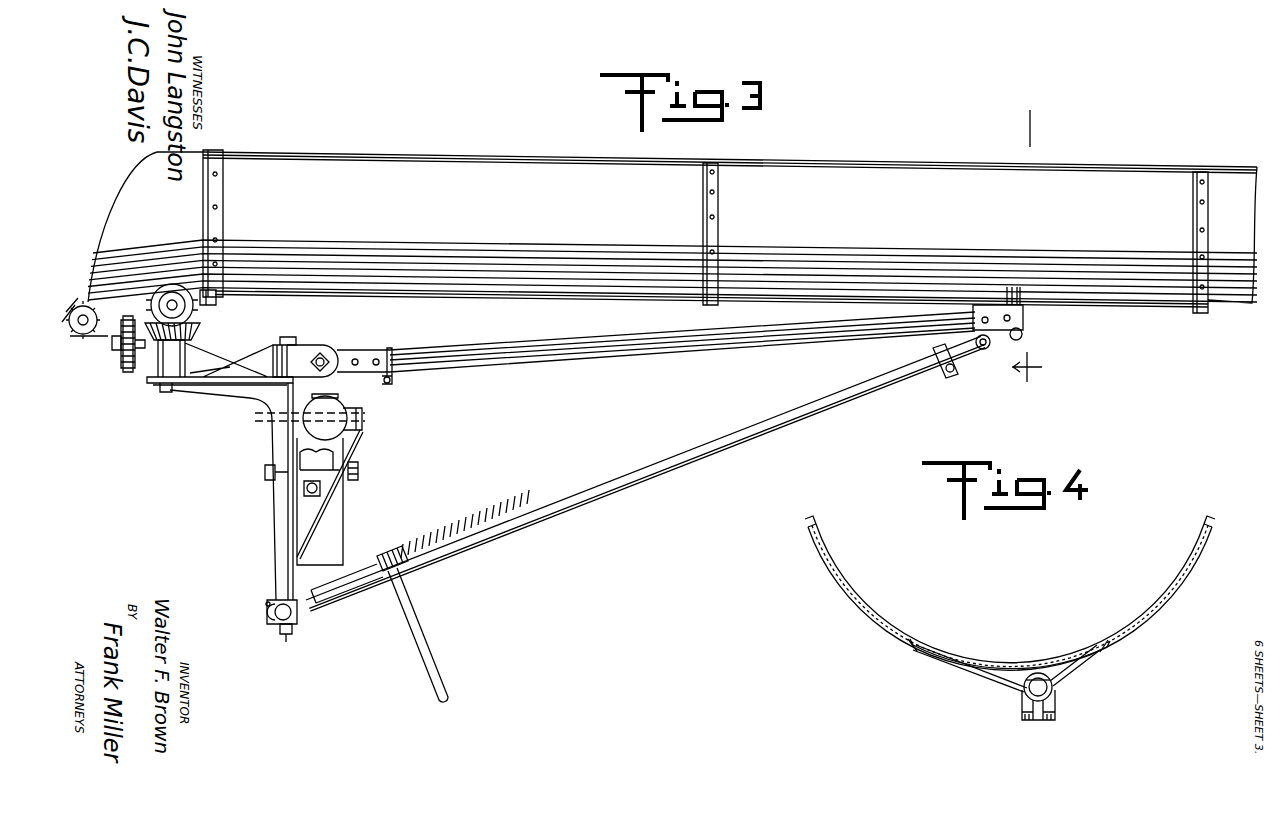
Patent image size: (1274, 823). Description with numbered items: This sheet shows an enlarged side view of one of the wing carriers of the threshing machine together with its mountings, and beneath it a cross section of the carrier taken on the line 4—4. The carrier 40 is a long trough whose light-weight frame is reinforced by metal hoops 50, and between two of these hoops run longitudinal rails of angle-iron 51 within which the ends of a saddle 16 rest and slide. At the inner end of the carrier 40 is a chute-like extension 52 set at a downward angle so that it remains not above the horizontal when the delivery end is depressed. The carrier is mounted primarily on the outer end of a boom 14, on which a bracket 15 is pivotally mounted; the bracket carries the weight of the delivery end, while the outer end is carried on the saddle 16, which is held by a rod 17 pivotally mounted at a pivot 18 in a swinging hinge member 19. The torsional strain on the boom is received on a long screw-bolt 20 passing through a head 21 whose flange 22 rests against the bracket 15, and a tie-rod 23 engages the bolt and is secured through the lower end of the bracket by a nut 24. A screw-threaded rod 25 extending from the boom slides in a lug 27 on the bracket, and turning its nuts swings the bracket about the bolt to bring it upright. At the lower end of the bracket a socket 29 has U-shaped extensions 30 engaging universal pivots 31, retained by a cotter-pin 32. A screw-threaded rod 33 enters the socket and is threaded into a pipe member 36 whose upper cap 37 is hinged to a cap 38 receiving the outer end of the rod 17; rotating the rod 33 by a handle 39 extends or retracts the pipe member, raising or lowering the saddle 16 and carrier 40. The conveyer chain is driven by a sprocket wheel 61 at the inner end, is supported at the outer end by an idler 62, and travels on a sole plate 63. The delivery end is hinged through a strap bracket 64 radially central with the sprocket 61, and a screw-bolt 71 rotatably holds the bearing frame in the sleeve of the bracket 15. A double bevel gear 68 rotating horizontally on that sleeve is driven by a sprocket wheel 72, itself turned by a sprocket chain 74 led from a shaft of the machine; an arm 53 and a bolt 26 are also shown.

In FIG. 3, the section line 4— 4 is at (1027, 242).
In FIG. 3, the boom 14 is at (340, 520).
In FIG. 3, the bracket 15 is at (275, 545).
In FIG. 3, the saddle 16 is at (1024, 306).
In FIG. 4, the saddle 16 is at (983, 680).
In FIG. 3, the rod 17 is at (646, 348).
In FIG. 4, the rod 17 is at (1038, 690).
In FIG. 3, the pivot 18 is at (330, 355).
In FIG. 3, the swinging hinge member 19 is at (298, 352).
In FIG. 3, the screw-bolt 20 is at (362, 428).
In FIG. 3, the head 21 is at (350, 410).
In FIG. 3, the flange 22 is at (334, 402).
In FIG. 3, the tie-rod 23 is at (357, 462).
In FIG. 3, the nut 24 is at (288, 636).
In FIG. 3, the rod 25 is at (300, 458).
In FIG. 3, the bolt 26 is at (360, 477).
In FIG. 3, the lug 27 is at (286, 480).
In FIG. 3, the socket 29 is at (370, 590).
In FIG. 3, the U-shaped extensions 30 is at (298, 620).
In FIG. 3, the universal pivots 31 is at (272, 618).
In FIG. 3, the cotter-pin 32 is at (266, 604).
In FIG. 3, the screw-threaded rod 33 is at (490, 526).
In FIG. 3, the pipe member 36 is at (698, 466).
In FIG. 3, the cap 37 is at (965, 370).
In FIG. 3, the cap 38 is at (1028, 335).
In FIG. 4, the cap 38 is at (1048, 720).
In FIG. 3, the handle 39 is at (438, 647).
In FIG. 3, the carrier 40 is at (882, 166).
In FIG. 4, the carrier 40 is at (866, 603).
In FIG. 3, the metal hoops 50 is at (222, 152).
In FIG. 4, the metal hoops 50 is at (827, 576).
In FIG. 3, the angle-iron rails 51 is at (1168, 298).
In FIG. 4, the angle-iron rails 51 is at (912, 652).
In FIG. 3, the chute-like extension 52 is at (110, 232).
In FIG. 3, the arm 53 is at (82, 300).
In FIG. 3, the driving sprocket wheel 61 is at (150, 310).
In FIG. 3, the idler 62 is at (85, 331).
In FIG. 4, the sole plate 63 is at (1018, 660).
In FIG. 3, the strap bracket 64 is at (210, 302).
In FIG. 3, the double bevel gear 68 is at (197, 333).
In FIG. 3, the screw-bolt 71 is at (167, 392).
In FIG. 3, the driving sprocket wheel 72 is at (120, 356).
In FIG. 3, the sprocket chain 74 is at (124, 370).